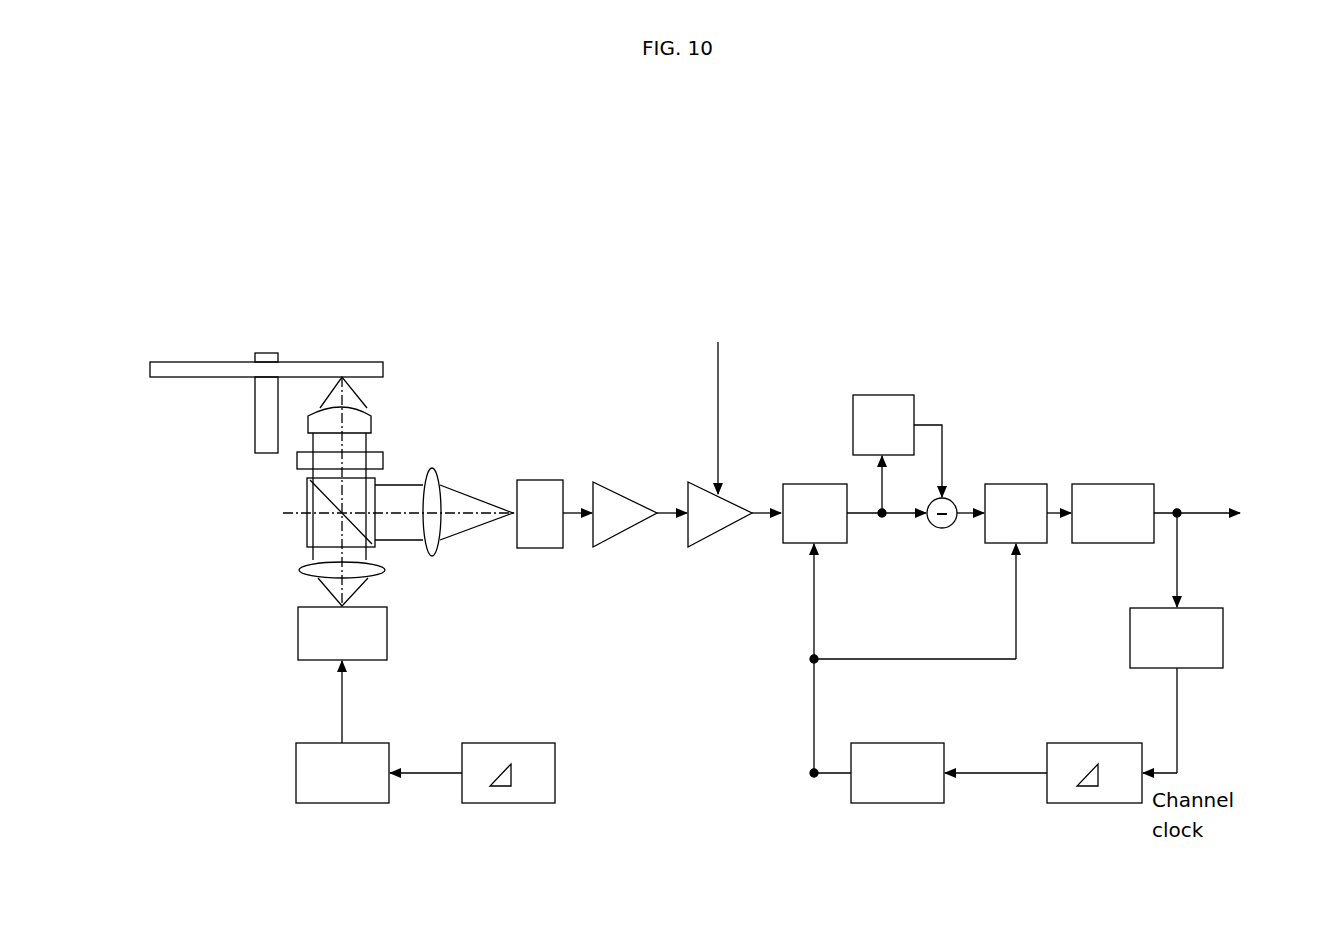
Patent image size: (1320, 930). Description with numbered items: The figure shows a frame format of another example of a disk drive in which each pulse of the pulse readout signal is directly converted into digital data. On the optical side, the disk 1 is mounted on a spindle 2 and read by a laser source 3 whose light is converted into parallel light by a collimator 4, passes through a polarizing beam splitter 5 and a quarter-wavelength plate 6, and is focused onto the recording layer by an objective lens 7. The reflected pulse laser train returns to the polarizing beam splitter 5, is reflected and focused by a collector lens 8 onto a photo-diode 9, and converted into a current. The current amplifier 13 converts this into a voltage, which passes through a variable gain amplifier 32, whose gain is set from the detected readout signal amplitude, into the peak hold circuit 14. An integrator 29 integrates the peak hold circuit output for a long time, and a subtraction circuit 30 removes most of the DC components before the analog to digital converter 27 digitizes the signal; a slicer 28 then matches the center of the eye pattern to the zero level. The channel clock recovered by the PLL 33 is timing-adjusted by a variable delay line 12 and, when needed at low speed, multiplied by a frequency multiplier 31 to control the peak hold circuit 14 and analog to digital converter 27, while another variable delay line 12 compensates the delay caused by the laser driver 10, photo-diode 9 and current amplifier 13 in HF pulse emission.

The disk 1 is at (197, 367).
The spindle / motor 2 is at (262, 408).
The radiation source (laser) 3 is at (313, 633).
The collimator 4 is at (318, 572).
The polarizing beam splitter 5 is at (318, 527).
The quarter-wavelength plate 6 is at (368, 460).
The objective lens 7 is at (370, 415).
The collector lens 8 is at (430, 525).
The photo-diode 9 is at (540, 485).
The laser driver 10 is at (343, 787).
The variable delay line 12 is at (508, 795).
The current amplifier 13 is at (608, 500).
The peak hold circuit 14 is at (797, 533).
The analog to digital converter 27 is at (1008, 488).
The slicer 28 is at (1099, 490).
The integrator 29 is at (882, 407).
The subtraction circuit 30 is at (942, 527).
The frequency multiplier 31 is at (903, 792).
The variable gain amplifier 32 is at (697, 523).
The PLL 33 is at (1142, 643).